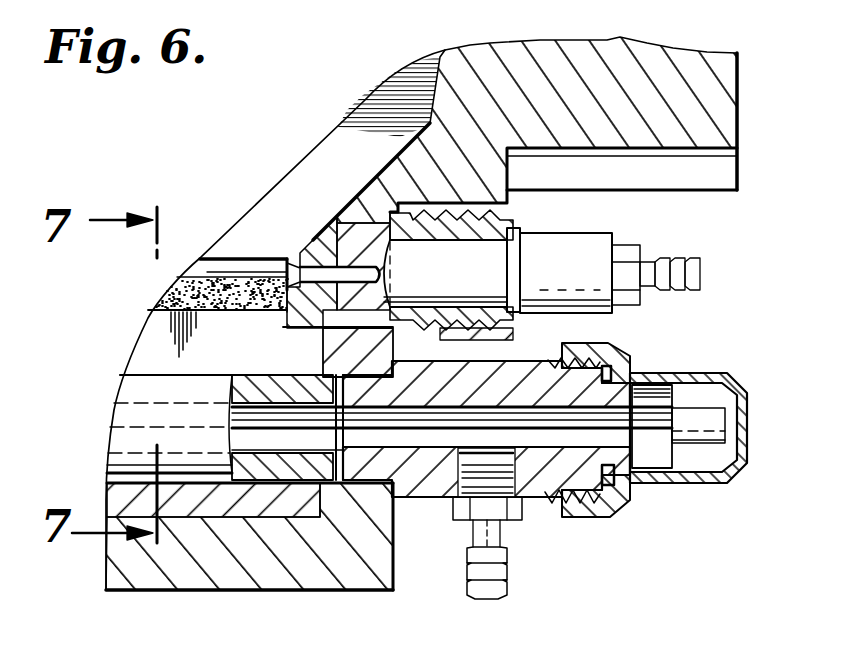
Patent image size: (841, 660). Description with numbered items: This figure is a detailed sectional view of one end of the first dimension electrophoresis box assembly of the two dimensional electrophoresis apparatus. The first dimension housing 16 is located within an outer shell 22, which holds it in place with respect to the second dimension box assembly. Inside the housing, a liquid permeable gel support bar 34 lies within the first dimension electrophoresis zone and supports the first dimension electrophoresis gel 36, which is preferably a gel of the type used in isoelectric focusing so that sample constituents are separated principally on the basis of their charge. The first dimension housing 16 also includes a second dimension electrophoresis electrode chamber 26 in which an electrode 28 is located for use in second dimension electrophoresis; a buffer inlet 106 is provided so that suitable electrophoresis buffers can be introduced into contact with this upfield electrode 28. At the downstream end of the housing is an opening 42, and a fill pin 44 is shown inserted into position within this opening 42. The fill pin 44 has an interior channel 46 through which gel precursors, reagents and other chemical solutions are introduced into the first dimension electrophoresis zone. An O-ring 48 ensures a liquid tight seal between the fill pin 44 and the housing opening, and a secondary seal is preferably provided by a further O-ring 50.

The first dimension housing 16 is at (305, 503).
The outer shell 22 is at (122, 567).
The second dimension electrophoresis electrode chamber 26 is at (432, 432).
The electrode 28 is at (653, 420).
The liquid permeable gel support bar 34 is at (168, 292).
The first dimension electrophoresis gel 36 is at (203, 257).
The opening 42 is at (298, 260).
The fill pin 44 is at (567, 243).
The interior channel 46 is at (288, 323).
The O-ring 48 is at (320, 253).
The O-ring 50 is at (387, 233).
The buffer inlet 106 is at (510, 560).